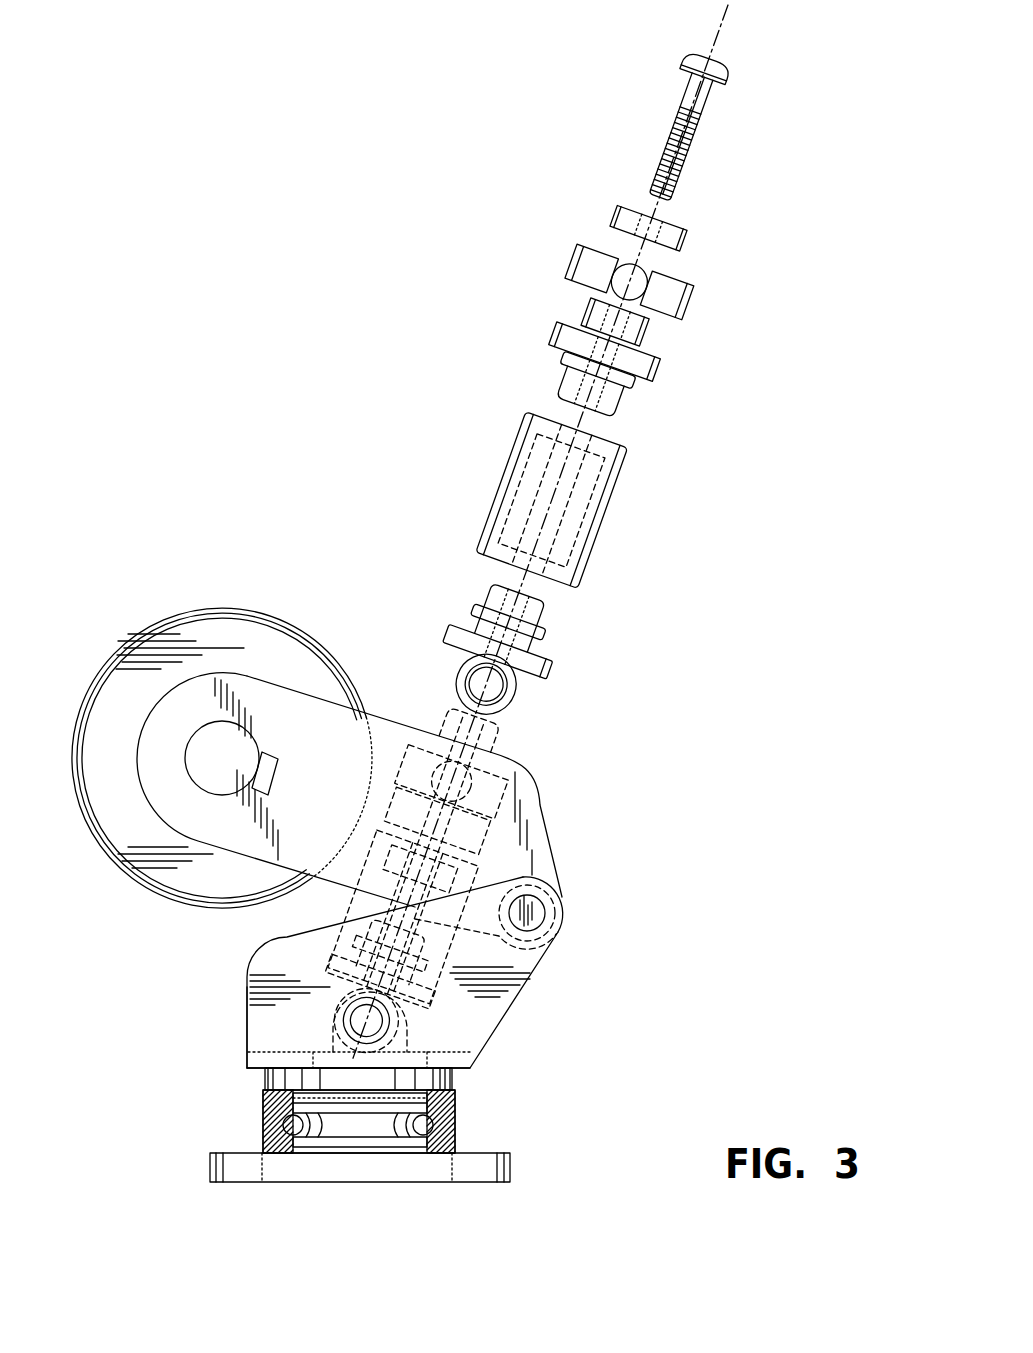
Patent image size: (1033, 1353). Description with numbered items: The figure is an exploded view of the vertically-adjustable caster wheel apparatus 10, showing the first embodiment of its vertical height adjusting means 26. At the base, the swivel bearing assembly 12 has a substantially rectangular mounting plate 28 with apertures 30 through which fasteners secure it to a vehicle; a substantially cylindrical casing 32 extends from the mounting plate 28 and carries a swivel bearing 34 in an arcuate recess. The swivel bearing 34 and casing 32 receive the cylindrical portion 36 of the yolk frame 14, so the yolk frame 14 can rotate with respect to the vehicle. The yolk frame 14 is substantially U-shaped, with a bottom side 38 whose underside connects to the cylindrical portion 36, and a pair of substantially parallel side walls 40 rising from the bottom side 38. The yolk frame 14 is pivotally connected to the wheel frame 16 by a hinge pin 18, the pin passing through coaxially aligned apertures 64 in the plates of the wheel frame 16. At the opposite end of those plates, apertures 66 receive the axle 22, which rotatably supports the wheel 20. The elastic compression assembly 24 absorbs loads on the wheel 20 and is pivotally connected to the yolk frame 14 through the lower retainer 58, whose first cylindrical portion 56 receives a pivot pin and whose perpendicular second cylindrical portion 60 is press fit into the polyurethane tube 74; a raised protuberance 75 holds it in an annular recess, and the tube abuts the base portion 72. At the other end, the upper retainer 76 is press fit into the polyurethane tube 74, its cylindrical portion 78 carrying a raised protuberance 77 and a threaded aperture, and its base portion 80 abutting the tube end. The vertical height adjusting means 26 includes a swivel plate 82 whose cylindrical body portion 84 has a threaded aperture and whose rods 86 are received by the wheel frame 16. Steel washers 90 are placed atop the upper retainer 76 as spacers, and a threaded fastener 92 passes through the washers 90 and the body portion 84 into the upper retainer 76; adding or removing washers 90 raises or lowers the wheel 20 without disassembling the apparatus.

The caster wheel apparatus 10 is at (424, 252).
The swivel bearing assembly 12 is at (476, 1134).
The yolk frame 14 is at (502, 1025).
The wheel frame 16 is at (542, 806).
The hinge pin 18 is at (532, 913).
The wheel 20 is at (250, 628).
The axle 22 is at (236, 769).
The elastic compression assembly 24 is at (636, 509).
The vertical height adjusting means 26 is at (704, 278).
The mounting plate 28 is at (512, 1162).
The apertures 30 is at (262, 1160).
The cylindrical casing 32 is at (265, 1131).
The swivel bearing 34 is at (265, 1110).
The cylindrical portion 36 is at (265, 1078).
The bottom side 38 is at (466, 1072).
The side walls 40 is at (247, 1000).
The first cylindrical portion 56 is at (518, 702).
The lower retainer 58 is at (558, 674).
The second cylindrical portion 60 is at (545, 645).
The apertures 64 is at (561, 888).
The apertures 66 is at (197, 740).
The base portion 72 is at (470, 628).
The polyurethane tube 74 is at (630, 470).
The raised protuberance 75 is at (477, 603).
The upper retainer 76 is at (663, 372).
The raised protuberance 77 is at (633, 393).
The cylindrical portion 78 is at (560, 386).
The base portion 80 is at (577, 328).
The swivel plate 82 is at (693, 310).
The cylindrical body portion 84 is at (575, 266).
The cylindrical rods 86 is at (630, 266).
The steel washers 90 is at (690, 243).
The threaded fastener 92 is at (690, 147).